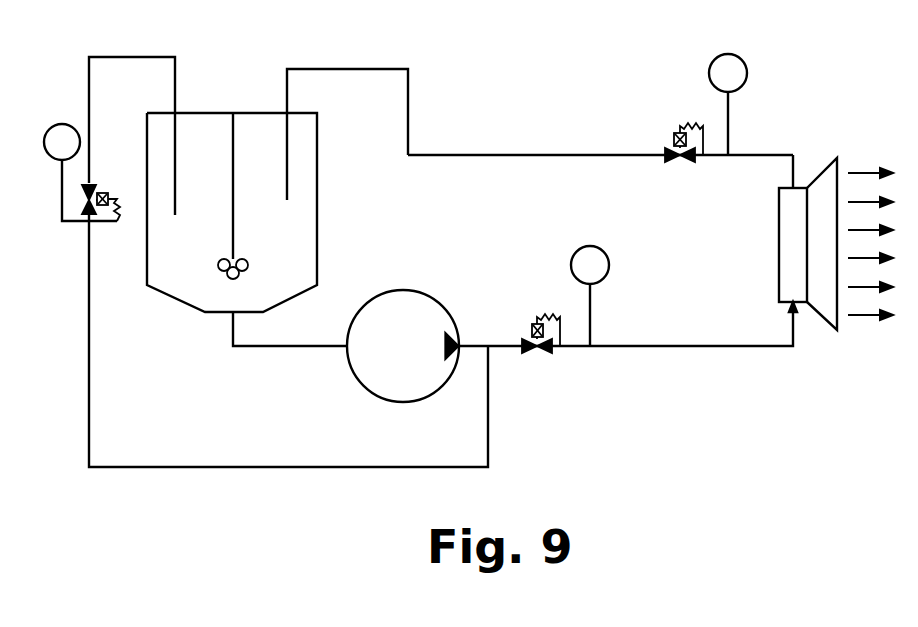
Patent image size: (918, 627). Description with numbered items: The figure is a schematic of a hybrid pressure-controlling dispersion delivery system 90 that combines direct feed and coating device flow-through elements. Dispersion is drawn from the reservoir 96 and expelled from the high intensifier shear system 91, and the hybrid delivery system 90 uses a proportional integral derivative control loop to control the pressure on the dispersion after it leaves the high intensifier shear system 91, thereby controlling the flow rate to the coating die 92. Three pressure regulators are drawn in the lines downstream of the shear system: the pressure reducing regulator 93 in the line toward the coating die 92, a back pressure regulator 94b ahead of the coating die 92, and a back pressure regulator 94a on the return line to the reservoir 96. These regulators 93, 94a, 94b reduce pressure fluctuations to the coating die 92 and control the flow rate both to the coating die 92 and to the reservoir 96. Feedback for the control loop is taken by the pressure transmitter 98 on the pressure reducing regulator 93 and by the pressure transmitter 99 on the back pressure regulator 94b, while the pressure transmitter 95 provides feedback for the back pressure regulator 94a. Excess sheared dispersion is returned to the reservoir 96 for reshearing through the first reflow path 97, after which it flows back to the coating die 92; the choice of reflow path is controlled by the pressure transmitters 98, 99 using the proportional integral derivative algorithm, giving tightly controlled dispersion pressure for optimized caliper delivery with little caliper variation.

The hybrid delivery system 90 is at (196, 511).
The high intensifier shear system 91 is at (360, 386).
The coating die 92 is at (817, 311).
The pressure reducing regulator 93 is at (548, 351).
The back pressure regulator 94a is at (81, 208).
The back pressure regulator 94b is at (672, 158).
The pressure transmitter 95 is at (58, 124).
The reservoir 96 is at (317, 160).
The first reflow path 97 is at (473, 155).
The pressure transmitter 98 is at (576, 252).
The pressure transmitter 99 is at (718, 56).